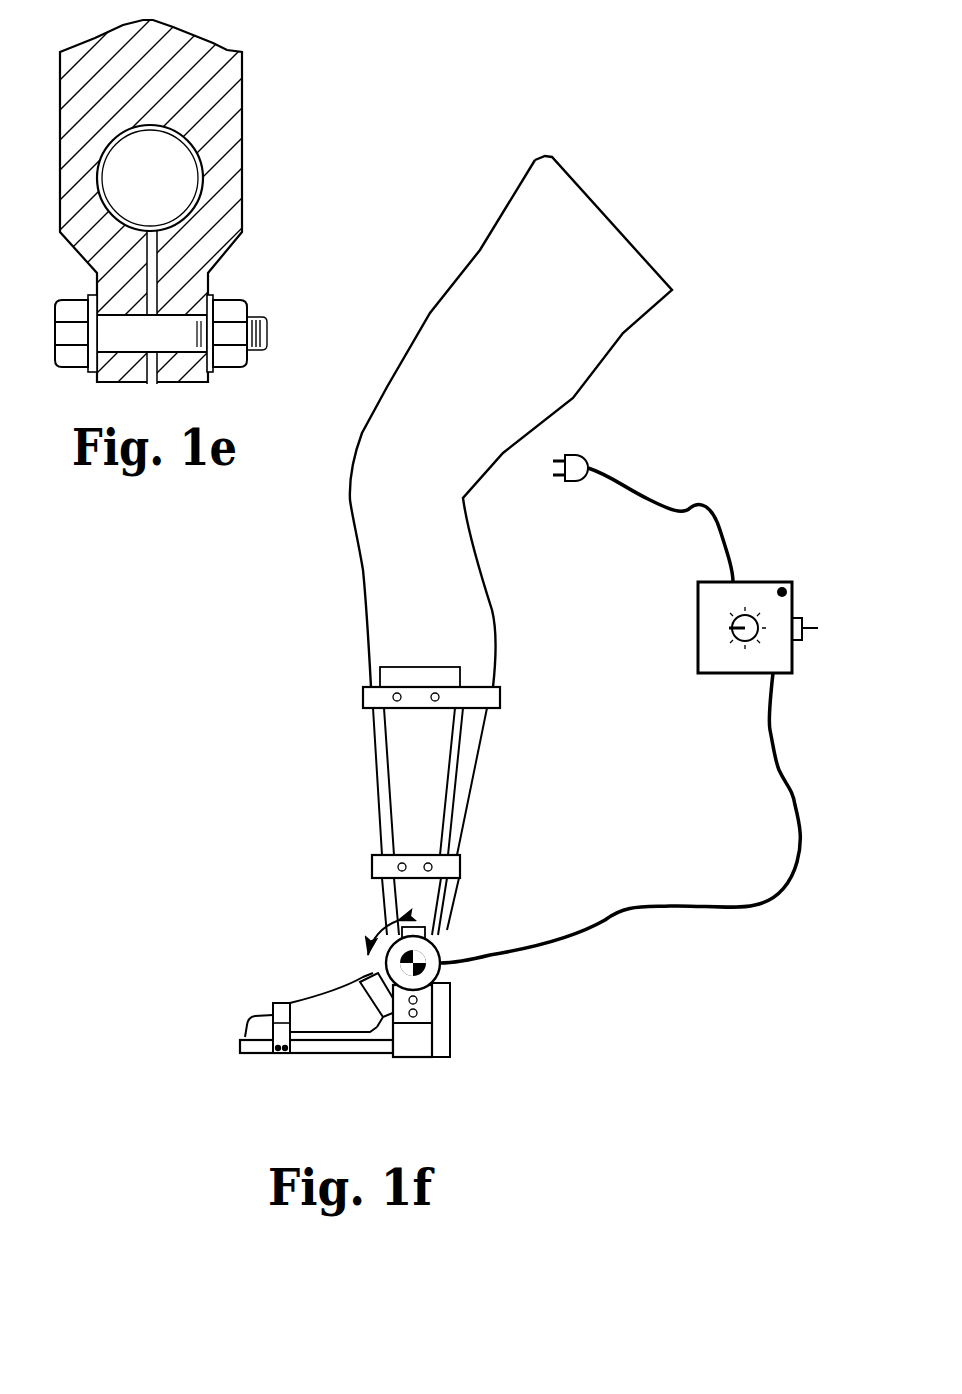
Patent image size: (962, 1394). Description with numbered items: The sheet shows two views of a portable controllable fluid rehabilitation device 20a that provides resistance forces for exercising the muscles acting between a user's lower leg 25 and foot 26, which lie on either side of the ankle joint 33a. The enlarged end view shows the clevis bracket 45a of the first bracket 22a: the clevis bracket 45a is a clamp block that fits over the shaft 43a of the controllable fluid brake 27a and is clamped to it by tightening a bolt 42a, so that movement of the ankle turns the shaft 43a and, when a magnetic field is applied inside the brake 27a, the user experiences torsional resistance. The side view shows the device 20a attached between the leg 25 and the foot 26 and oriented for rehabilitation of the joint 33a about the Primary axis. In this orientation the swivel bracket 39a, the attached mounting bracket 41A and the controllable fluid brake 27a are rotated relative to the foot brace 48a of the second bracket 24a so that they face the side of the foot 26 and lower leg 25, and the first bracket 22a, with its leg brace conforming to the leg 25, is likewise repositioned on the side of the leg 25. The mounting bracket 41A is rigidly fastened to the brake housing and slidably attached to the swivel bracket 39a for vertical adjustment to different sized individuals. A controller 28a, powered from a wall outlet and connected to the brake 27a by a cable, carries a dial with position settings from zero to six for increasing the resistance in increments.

In FIG. 1F, the portable controllable fluid rehabilitation device 20a is at (364, 890).
In FIG. 1F, the first bracket 22a is at (458, 754).
In FIG. 1F, the second bracket 24a is at (318, 1056).
In FIG. 1F, the lower leg 25 is at (511, 543).
In FIG. 1F, the foot 26 is at (322, 1005).
In FIG. 1F, the controllable fluid brake 27a is at (446, 978).
In FIG. 1F, the controller 28a is at (693, 629).
In FIG. 1F, the body joint 33a is at (420, 958).
In FIG. 1F, the swivel bracket 39a is at (405, 1052).
In FIG. 1F, the mounting bracket 41A is at (420, 1000).
In FIG. 1E, the bolt 42a is at (173, 325).
In FIG. 1E, the shaft 43a is at (180, 178).
In FIG. 1E, the clevis bracket 45a is at (242, 77).
In FIG. 1F, the foot brace 48a is at (252, 1048).